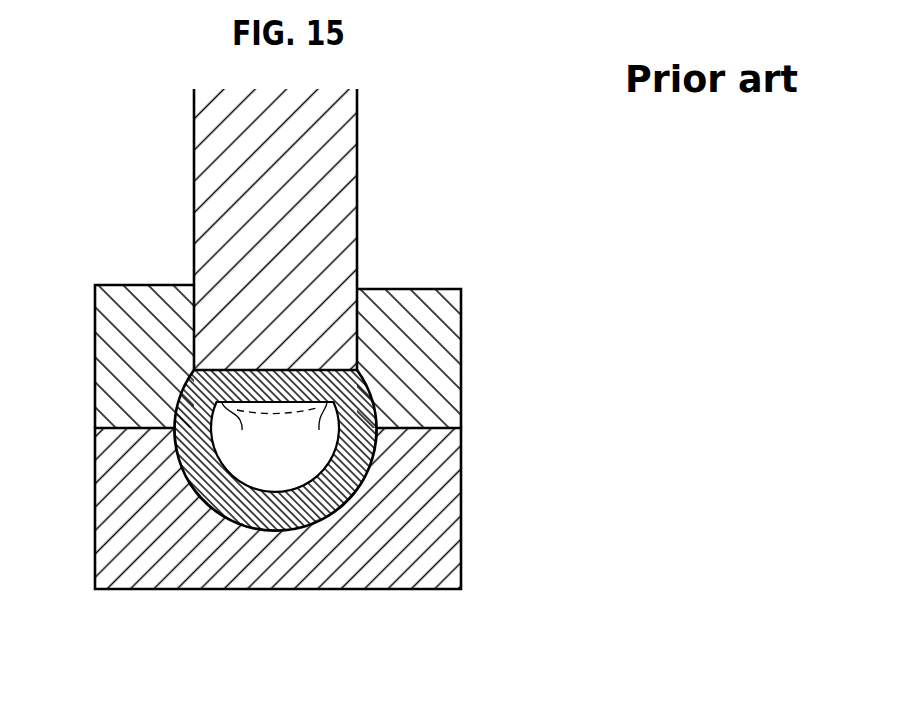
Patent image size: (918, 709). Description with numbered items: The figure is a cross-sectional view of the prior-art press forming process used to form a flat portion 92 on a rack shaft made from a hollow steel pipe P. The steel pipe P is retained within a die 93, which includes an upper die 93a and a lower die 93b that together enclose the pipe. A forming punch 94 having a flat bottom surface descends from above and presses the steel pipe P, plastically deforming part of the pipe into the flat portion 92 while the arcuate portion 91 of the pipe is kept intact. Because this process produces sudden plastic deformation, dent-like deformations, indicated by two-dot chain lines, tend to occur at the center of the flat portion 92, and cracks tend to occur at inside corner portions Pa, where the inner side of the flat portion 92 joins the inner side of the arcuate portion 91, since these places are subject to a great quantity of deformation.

The arcuate portion 91 is at (287, 528).
The flat portion 92 is at (262, 362).
The die 93 is at (371, 437).
The upper die 93a is at (425, 350).
The lower die 93b is at (332, 508).
The forming punch 94 is at (338, 180).
The steel pipe P is at (255, 512).
The inside corner portions Pa is at (274, 429).